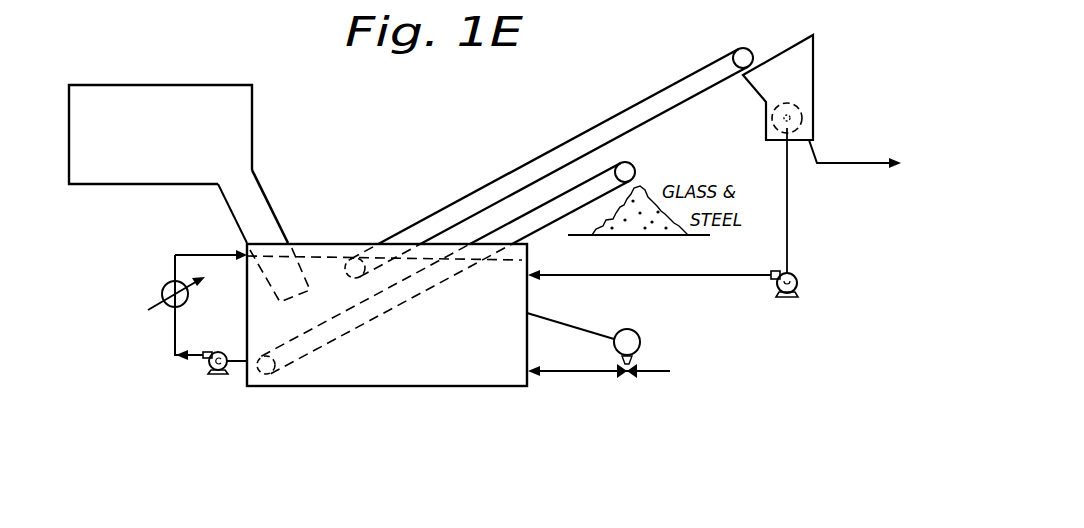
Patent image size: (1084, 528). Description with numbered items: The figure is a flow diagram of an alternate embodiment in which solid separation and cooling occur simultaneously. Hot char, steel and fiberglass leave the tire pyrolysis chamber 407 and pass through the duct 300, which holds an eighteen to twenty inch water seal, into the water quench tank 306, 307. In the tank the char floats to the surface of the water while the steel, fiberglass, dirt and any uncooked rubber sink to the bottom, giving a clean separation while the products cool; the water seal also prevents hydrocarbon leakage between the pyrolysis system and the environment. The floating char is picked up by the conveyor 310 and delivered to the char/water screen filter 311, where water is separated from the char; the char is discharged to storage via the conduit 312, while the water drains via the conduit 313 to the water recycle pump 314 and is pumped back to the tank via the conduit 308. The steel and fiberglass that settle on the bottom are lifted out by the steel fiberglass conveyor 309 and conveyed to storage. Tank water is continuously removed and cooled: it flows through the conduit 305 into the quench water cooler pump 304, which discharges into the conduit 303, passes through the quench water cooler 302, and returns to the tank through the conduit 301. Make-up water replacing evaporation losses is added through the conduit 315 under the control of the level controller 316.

The tire pyrolysis chamber 407 is at (178, 85).
The duct 300 is at (267, 192).
The conduit 301 is at (210, 255).
The quench water cooler 302 is at (166, 285).
The conduit 303 is at (175, 330).
The quench water cooler pump 304 is at (207, 364).
The conduit 305 is at (238, 363).
The water quench tank 306 is at (434, 358).
The water quench tank 307 is at (527, 293).
The conduit 308 is at (685, 275).
The steel fiberglass conveyor 309 is at (543, 228).
The conveyor 310 is at (560, 148).
The char/water screen filter 311 is at (817, 67).
The conduit 312 is at (842, 163).
The conduit 313 is at (787, 243).
The water recycle pump 314 is at (797, 287).
The conduit 315 is at (580, 373).
The level controller 316 is at (640, 342).